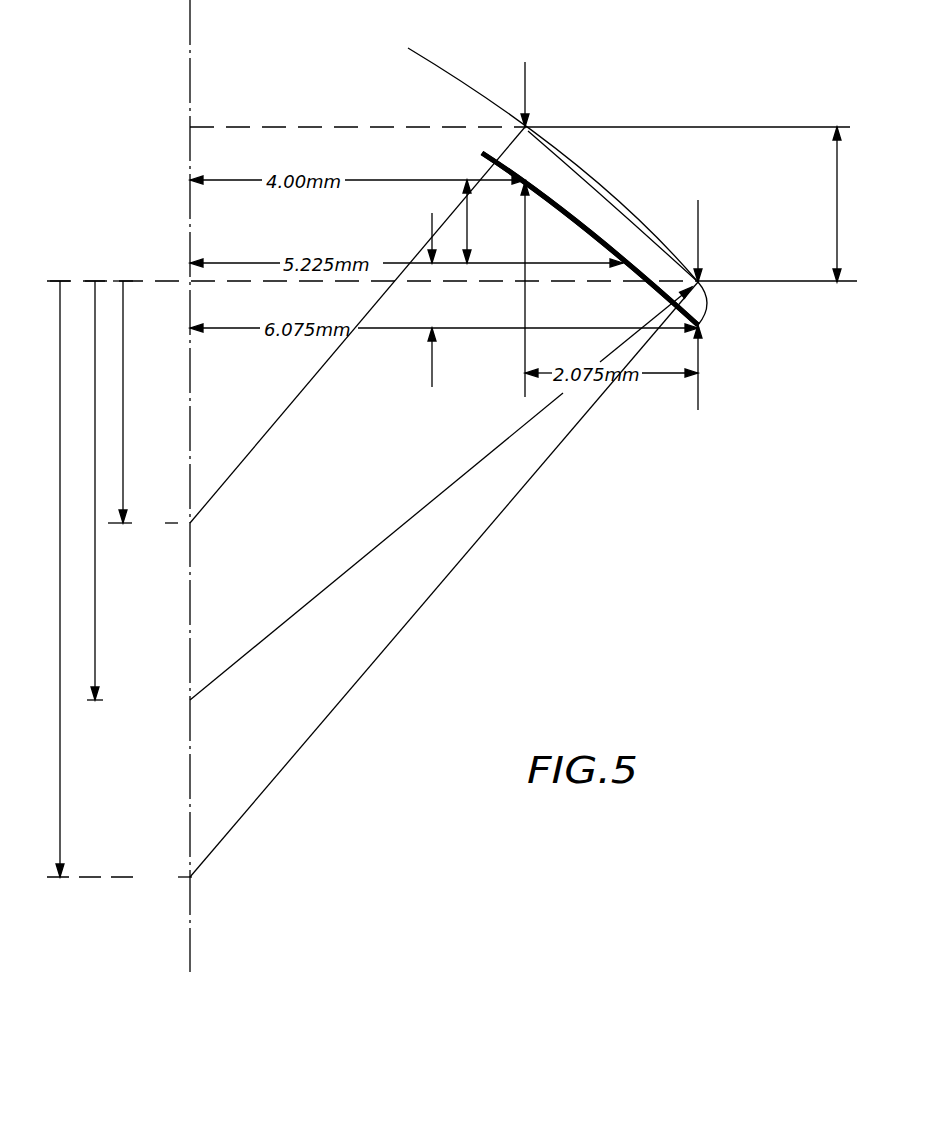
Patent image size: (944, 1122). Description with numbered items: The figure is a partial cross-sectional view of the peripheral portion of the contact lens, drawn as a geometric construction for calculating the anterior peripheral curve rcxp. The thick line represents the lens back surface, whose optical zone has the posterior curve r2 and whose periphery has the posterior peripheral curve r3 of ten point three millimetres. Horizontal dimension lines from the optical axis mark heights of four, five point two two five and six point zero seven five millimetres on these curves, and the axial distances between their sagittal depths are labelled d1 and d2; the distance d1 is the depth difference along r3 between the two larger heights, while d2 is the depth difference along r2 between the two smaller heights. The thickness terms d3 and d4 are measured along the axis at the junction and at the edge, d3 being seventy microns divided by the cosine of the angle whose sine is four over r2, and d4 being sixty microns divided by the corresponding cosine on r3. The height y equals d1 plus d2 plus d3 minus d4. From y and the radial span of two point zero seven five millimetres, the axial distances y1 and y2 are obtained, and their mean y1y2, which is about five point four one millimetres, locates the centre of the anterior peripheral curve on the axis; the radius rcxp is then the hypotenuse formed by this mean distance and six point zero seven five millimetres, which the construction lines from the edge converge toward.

The axial distance d1 is at (431, 300).
The axial distance d2 is at (482, 221).
The axial distance d3 is at (523, 157).
The axial distance d4 is at (702, 300).
The posterior optical zone curve r2 is at (565, 213).
The posterior peripheral curve r3 is at (628, 272).
The anterior peripheral curve rcxp is at (323, 583).
The height y is at (847, 204).
The distance y1 is at (143, 412).
The mean distance (y1+y2)/2 y1y2 is at (173, 708).
The distance y2 is at (119, 589).